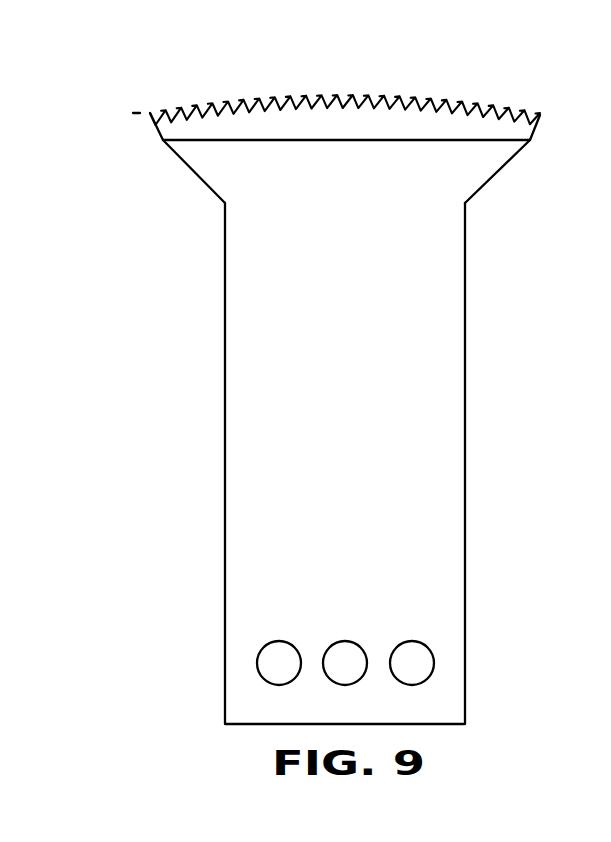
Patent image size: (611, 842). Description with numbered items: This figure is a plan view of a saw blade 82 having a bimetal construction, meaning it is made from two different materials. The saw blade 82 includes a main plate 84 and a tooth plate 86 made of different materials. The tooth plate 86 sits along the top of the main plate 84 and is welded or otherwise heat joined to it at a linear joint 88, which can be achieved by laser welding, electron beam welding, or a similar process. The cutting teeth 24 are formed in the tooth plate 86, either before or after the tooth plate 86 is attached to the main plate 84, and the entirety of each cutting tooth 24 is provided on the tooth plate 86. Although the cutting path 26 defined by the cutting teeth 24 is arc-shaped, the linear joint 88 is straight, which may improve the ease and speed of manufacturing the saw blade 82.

The cutting teeth 24 is at (345, 84).
The cutting path 26 is at (345, 102).
The saw blade 82 is at (362, 383).
The main plate 84 is at (440, 295).
The tooth plate 86 is at (520, 132).
The linear joint 88 is at (203, 142).